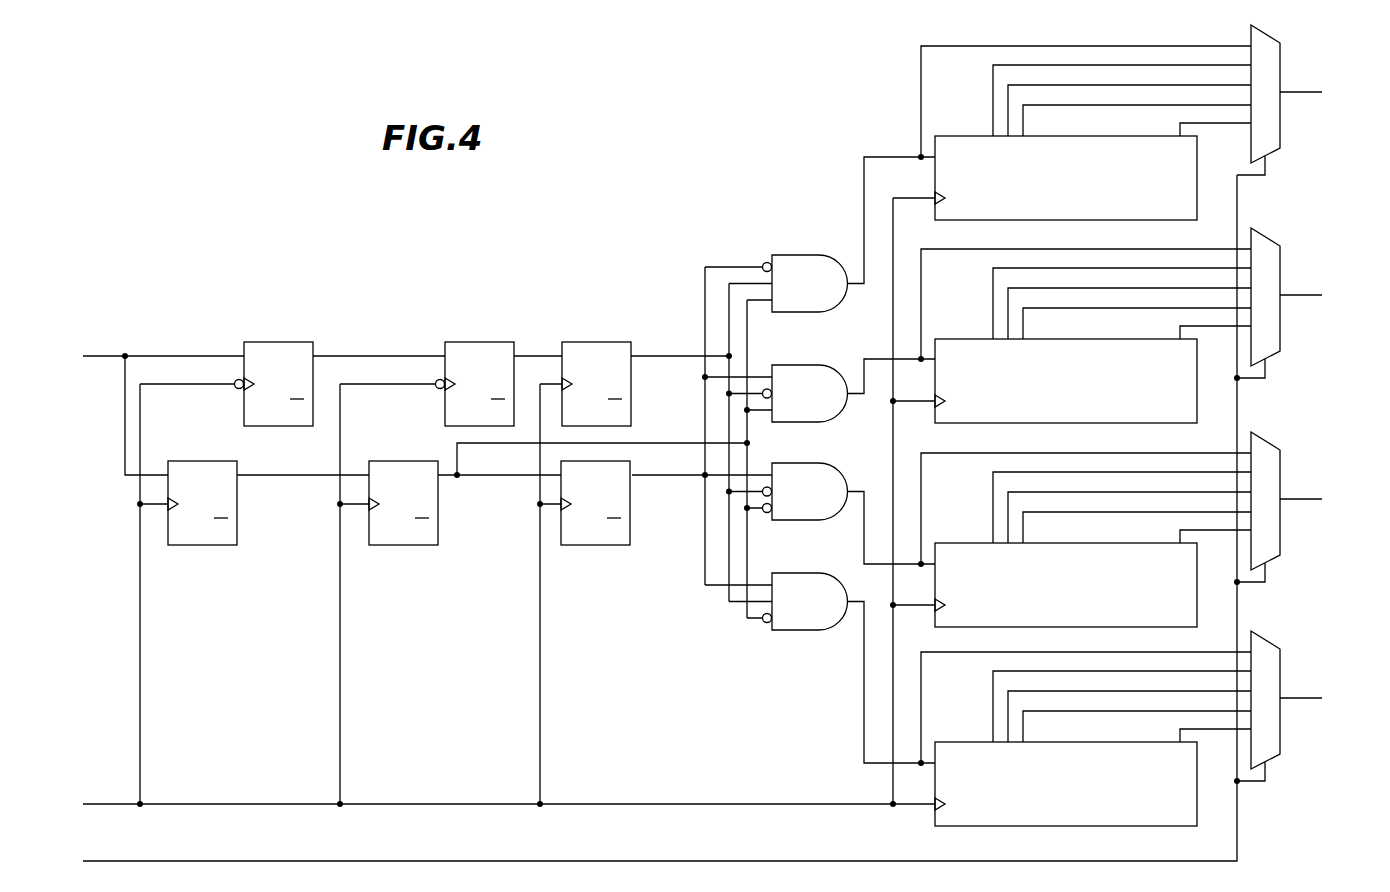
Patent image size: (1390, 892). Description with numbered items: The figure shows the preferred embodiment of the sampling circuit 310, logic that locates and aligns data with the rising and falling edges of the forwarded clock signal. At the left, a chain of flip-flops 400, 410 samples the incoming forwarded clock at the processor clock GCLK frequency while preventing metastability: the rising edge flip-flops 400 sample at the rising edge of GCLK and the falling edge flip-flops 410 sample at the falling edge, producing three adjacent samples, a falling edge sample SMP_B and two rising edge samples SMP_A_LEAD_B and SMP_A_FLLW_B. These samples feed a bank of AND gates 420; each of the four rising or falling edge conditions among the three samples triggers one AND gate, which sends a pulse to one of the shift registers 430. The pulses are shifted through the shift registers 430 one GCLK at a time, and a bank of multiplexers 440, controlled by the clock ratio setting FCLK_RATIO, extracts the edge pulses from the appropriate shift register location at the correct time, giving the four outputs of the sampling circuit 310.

The sampling circuit 310 is at (252, 181).
The rising edge flip-flops 400 is at (560, 343).
The falling edge flip-flops 410 is at (275, 342).
The bank of AND gates 420 is at (806, 255).
The bank of shift registers 430 is at (975, 136).
The bank of multiplexers 440 is at (1281, 66).